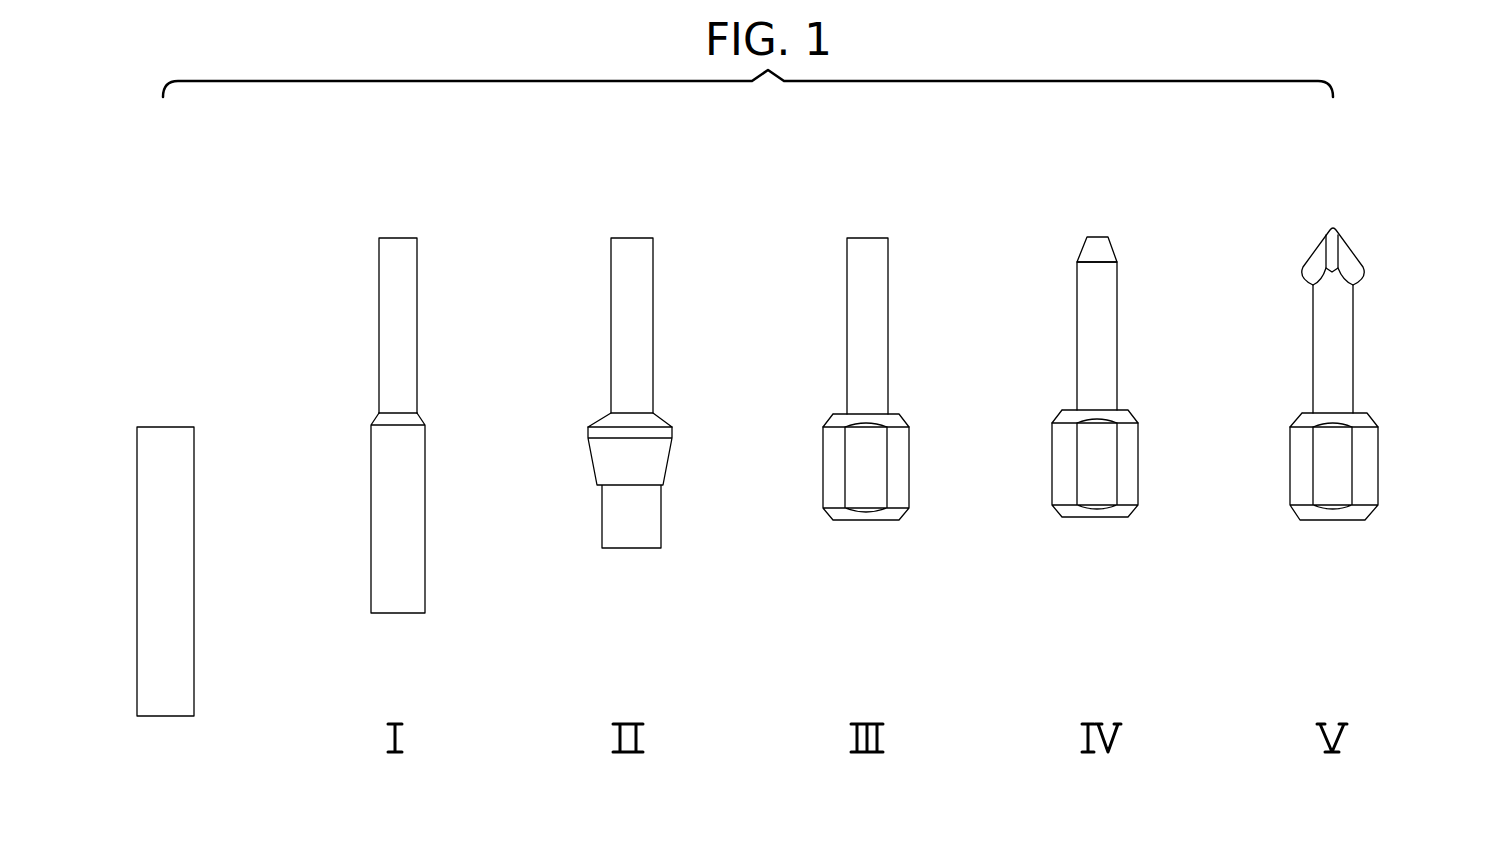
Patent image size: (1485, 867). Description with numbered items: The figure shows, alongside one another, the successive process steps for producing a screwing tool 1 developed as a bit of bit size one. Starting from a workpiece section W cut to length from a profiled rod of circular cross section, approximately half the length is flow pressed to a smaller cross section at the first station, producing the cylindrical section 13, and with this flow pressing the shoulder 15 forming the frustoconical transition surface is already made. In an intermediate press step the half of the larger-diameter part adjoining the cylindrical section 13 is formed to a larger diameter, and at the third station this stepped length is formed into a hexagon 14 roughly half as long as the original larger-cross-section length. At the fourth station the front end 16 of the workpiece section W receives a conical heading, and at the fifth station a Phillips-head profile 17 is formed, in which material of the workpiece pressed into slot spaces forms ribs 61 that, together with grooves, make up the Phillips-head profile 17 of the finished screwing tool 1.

The screwing tool 1 is at (1390, 339).
The workpiece section W is at (210, 631).
The cylindrical section 13 is at (389, 298).
The hexagon 14 is at (862, 495).
The shoulder 15 is at (419, 414).
The front end 16 is at (1108, 250).
The Phillips-head profile 17 is at (1363, 262).
The ribs 61 is at (1350, 260).